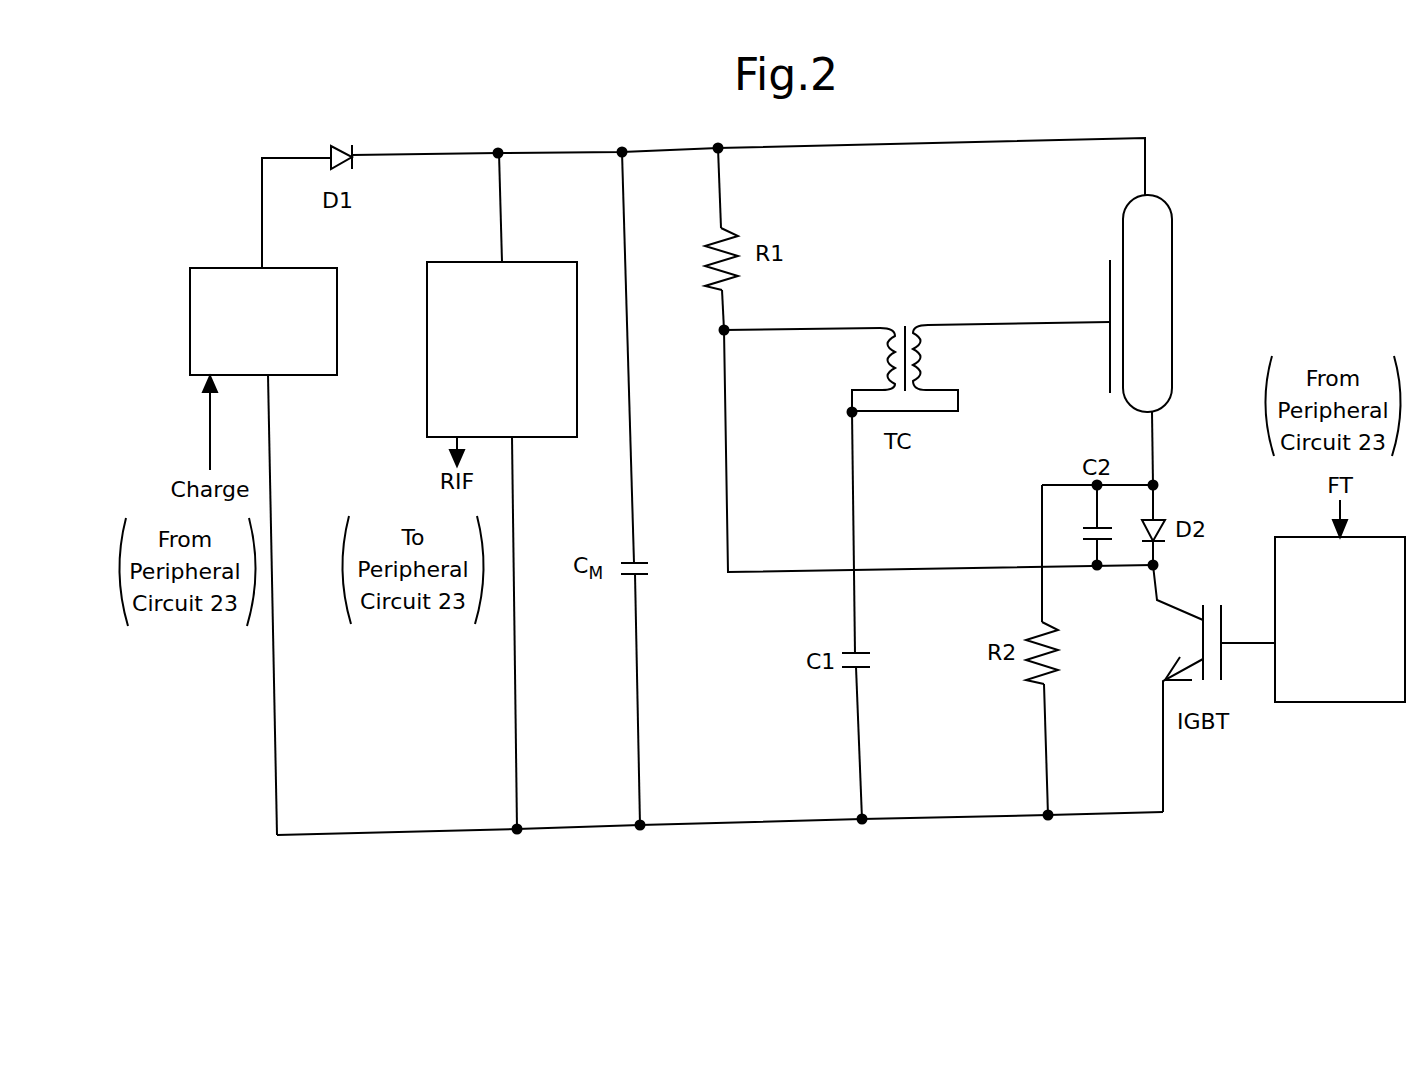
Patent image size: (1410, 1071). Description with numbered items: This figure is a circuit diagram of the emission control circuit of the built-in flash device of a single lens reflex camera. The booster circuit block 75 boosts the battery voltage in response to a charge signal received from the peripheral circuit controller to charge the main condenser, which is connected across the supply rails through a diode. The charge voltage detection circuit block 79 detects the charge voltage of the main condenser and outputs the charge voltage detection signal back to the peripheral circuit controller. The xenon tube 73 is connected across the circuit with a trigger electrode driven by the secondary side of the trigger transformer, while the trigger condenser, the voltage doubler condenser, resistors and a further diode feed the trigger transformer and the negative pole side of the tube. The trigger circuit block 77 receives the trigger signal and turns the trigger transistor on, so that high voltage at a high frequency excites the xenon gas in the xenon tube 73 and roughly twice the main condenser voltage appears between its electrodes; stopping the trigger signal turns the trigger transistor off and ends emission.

The booster circuit block 75 is at (263, 308).
The charge voltage detection circuit block 79 is at (502, 337).
The xenon tube 73 is at (1188, 303).
The trigger circuit block 77 is at (1339, 604).